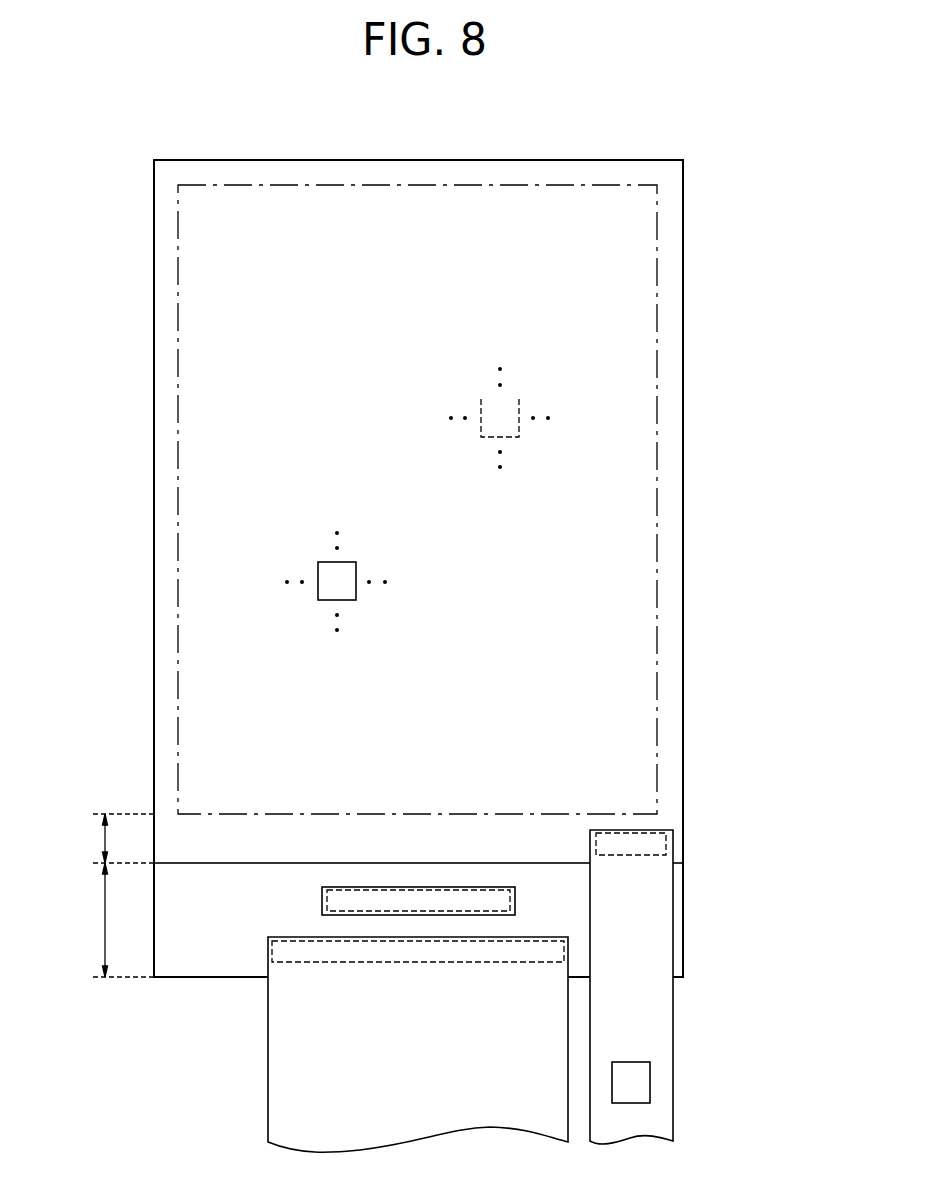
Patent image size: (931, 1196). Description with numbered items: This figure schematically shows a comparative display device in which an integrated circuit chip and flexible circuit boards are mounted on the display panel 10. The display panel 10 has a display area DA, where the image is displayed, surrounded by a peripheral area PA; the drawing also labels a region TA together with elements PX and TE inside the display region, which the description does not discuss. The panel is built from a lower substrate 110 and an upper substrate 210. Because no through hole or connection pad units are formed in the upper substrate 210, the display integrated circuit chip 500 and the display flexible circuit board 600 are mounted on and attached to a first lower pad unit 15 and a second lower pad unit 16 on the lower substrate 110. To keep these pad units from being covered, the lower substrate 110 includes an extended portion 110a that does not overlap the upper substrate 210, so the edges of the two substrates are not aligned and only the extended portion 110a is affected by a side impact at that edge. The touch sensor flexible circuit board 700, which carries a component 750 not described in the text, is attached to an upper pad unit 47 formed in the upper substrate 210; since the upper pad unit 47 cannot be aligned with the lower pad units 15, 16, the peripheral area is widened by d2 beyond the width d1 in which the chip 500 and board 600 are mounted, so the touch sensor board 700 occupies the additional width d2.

The display panel 10 is at (700, 187).
The lower substrate 110 is at (683, 360).
The upper substrate 210 is at (479, 568).
The extended portion 110a is at (683, 918).
The peripheral area PA is at (166, 348).
The display area DA is at (215, 420).
The touch area TA is at (375, 499).
The pixel PX is at (499, 418).
The touch electrode TE is at (336, 581).
The peripheral area width d1 is at (112, 920).
The additional peripheral area width d2 is at (112, 838).
The display integrated circuit chip 500 is at (437, 887).
The first lower pad unit 15 is at (478, 889).
The display flexible circuit board 600 is at (268, 1095).
The second lower pad unit 16 is at (303, 963).
The touch sensor flexible circuit board 700 is at (673, 1015).
The upper pad unit 47 is at (666, 843).
The touch driving chip 750 is at (650, 1082).